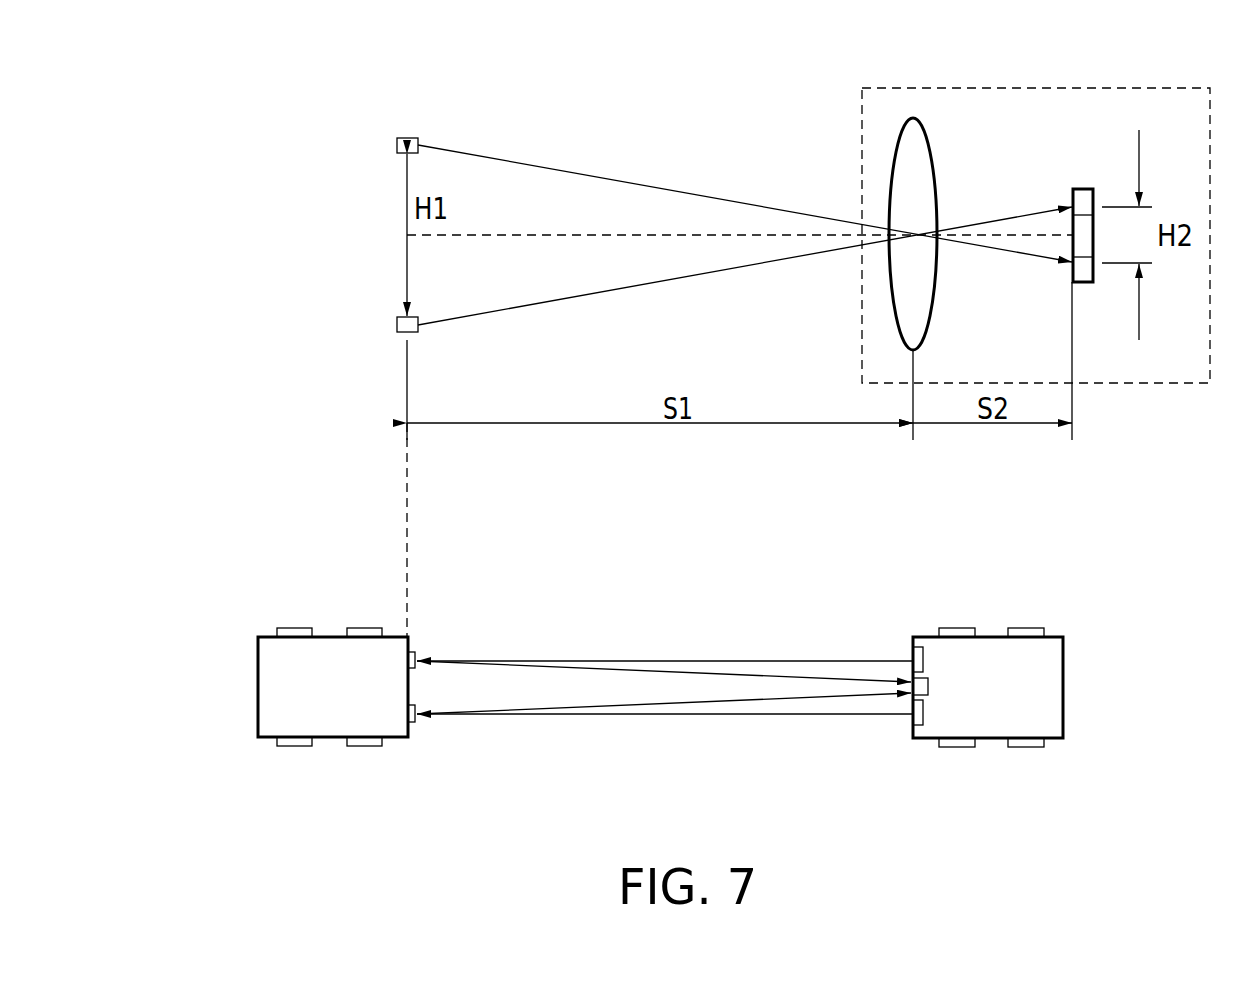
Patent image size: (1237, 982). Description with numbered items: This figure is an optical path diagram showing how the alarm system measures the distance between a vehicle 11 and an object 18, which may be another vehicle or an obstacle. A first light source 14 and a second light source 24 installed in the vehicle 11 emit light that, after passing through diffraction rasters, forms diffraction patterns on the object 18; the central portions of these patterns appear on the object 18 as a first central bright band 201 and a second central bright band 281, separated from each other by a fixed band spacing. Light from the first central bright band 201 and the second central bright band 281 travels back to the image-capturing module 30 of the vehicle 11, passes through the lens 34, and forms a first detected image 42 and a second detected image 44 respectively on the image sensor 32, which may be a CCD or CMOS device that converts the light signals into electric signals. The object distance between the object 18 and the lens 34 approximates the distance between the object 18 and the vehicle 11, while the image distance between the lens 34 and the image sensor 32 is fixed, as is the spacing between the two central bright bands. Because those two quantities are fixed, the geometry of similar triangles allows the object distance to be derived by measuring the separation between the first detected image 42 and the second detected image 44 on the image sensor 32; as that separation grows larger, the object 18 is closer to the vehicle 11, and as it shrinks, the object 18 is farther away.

The first central bright band 201 is at (412, 138).
The second central bright band 281 is at (413, 332).
The lens 34 is at (913, 130).
The image-capturing module 30 is at (1172, 88).
The image sensor 32 is at (1078, 193).
The first detected image 42 is at (1082, 200).
The second detected image 44 is at (1082, 280).
The object 18 is at (250, 663).
The vehicle 11 is at (1072, 663).
The first light source 14 is at (913, 645).
The second light source 24 is at (913, 730).